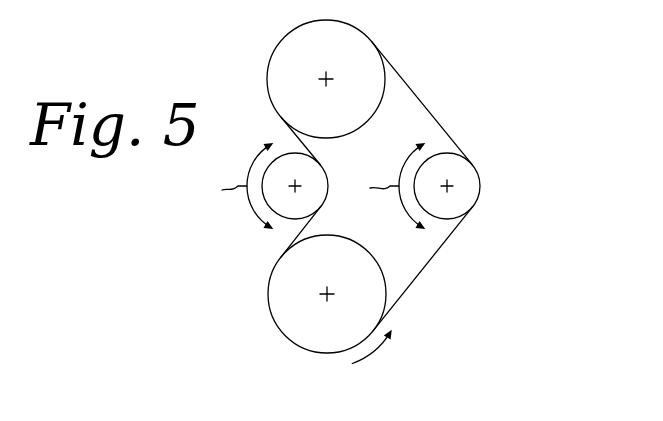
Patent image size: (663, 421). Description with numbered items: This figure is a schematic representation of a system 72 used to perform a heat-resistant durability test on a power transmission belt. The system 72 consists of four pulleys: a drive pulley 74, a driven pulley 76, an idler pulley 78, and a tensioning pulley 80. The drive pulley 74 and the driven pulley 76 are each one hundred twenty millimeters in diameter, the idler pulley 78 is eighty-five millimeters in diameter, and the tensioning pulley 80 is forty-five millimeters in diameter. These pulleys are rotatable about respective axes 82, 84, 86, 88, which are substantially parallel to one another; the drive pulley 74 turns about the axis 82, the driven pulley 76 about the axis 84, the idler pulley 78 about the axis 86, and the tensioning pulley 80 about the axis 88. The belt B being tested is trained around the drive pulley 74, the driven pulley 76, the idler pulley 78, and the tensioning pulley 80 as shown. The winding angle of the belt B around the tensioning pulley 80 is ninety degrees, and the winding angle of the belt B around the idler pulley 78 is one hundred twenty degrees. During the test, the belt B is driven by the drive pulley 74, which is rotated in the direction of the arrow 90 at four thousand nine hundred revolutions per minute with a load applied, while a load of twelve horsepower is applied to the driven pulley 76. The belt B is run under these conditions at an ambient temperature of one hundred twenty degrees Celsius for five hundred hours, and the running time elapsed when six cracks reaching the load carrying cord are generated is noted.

The system 72 is at (530, 90).
The drive pulley 74 is at (268, 312).
The driven pulley 76 is at (277, 46).
The idler pulley 78 is at (325, 170).
The tensioning pulley 80 is at (477, 203).
The axis 82 is at (327, 295).
The axis 84 is at (326, 79).
The axis 86 is at (295, 186).
The axis 88 is at (447, 186).
The arrow 90 is at (380, 347).
The belt B is at (420, 98).